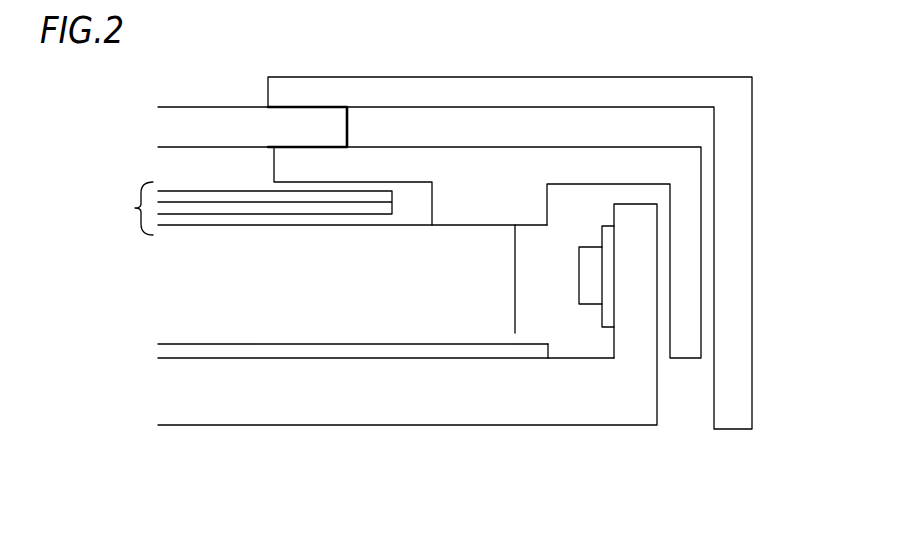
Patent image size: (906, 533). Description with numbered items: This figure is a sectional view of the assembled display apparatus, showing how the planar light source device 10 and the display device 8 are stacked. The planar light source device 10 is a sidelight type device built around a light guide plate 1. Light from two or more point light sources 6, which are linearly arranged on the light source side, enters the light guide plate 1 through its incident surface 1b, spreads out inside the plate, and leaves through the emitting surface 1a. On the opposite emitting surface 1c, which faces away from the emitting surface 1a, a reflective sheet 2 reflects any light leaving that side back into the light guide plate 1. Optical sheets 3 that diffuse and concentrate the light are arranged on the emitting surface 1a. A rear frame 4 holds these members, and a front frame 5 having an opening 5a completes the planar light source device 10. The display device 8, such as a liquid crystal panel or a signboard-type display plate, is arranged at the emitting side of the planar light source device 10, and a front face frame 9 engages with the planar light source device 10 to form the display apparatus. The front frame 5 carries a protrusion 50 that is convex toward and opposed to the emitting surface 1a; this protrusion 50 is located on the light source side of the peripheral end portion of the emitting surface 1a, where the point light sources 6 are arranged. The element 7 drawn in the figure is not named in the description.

The light guide plate 1 is at (378, 346).
The emitting surface 1a is at (223, 225).
The incident surface 1b is at (517, 333).
The opposite emitting surface 1c is at (280, 344).
The reflective sheet 2 is at (480, 346).
The optical sheets 3 is at (247, 208).
The rear frame 4 is at (632, 412).
The front frame 5 is at (682, 268).
The opening 5a is at (245, 157).
The point light sources 6 is at (592, 270).
The conductive member 7 is at (608, 260).
The display device 8 is at (193, 122).
The front face frame 9 is at (735, 122).
The planar light source device 10 is at (157, 447).
The protrusion 50 is at (462, 177).